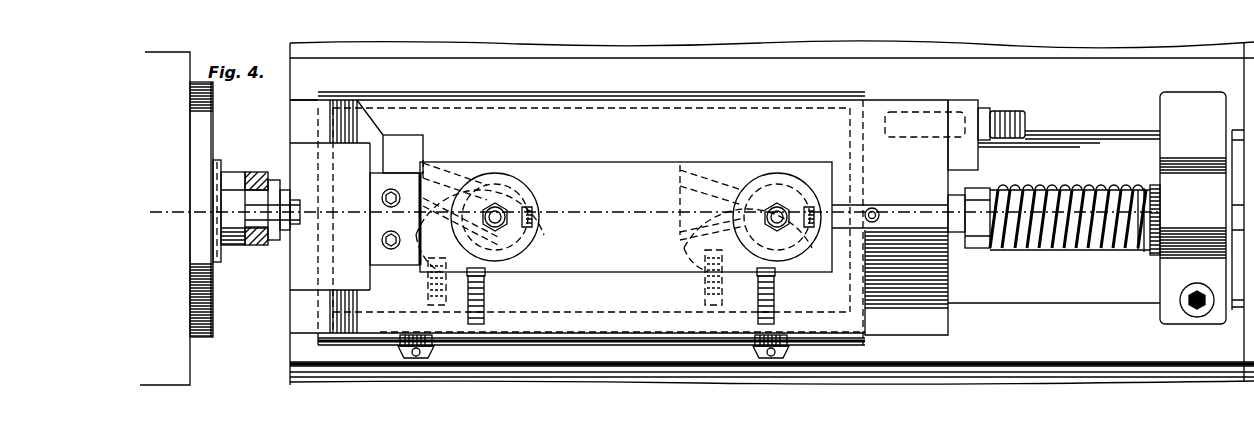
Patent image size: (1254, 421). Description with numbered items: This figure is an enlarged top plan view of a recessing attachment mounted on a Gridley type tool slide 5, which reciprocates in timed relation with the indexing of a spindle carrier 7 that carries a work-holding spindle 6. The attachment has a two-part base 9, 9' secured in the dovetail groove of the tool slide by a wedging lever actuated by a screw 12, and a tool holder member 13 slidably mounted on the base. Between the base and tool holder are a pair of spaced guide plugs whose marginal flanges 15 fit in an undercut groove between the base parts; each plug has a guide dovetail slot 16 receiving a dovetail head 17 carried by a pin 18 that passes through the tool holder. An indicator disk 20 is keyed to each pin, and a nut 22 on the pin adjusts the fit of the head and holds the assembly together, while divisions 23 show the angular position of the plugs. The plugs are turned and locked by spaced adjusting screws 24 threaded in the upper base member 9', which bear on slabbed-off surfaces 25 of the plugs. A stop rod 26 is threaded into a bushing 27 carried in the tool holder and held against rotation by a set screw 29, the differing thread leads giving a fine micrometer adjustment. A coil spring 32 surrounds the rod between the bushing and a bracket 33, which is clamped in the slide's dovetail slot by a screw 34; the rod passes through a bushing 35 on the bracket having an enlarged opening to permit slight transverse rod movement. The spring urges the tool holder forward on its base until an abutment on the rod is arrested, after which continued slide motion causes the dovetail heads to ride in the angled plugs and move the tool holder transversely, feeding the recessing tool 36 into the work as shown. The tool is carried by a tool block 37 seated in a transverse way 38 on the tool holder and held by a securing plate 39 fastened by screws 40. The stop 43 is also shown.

The tool slide 5 is at (1062, 365).
The spindle 6 is at (215, 328).
The spindle carrier 7 is at (195, 372).
The base member 9 is at (591, 348).
The upper base member 9' is at (619, 205).
The screw 12 is at (416, 360).
The tool holder member 13 is at (900, 330).
The marginal flange 15 is at (492, 150).
The guide dovetail slot 16 is at (447, 158).
The dovetail head 17 is at (470, 180).
The pin 18 is at (470, 225).
The indicator disk 20 is at (508, 188).
The nut 22 is at (525, 250).
The divisions 23 is at (540, 230).
The adjusting screw 24 is at (470, 312).
The slabbed-off surface 25 is at (426, 275).
The stop rod 26 is at (1030, 250).
The bushing 27 is at (975, 250).
The set screw 29 is at (878, 209).
The coil spring 32 is at (1083, 190).
The bracket 33 is at (1160, 164).
The screw 34 is at (1180, 300).
The bushing 35 is at (1150, 255).
The recessing tool 36 is at (270, 248).
The tool block 37 is at (305, 158).
The transverse way 38 is at (330, 305).
The securing plate 39 is at (403, 175).
The screws 40 is at (372, 242).
The stop 43 is at (917, 108).